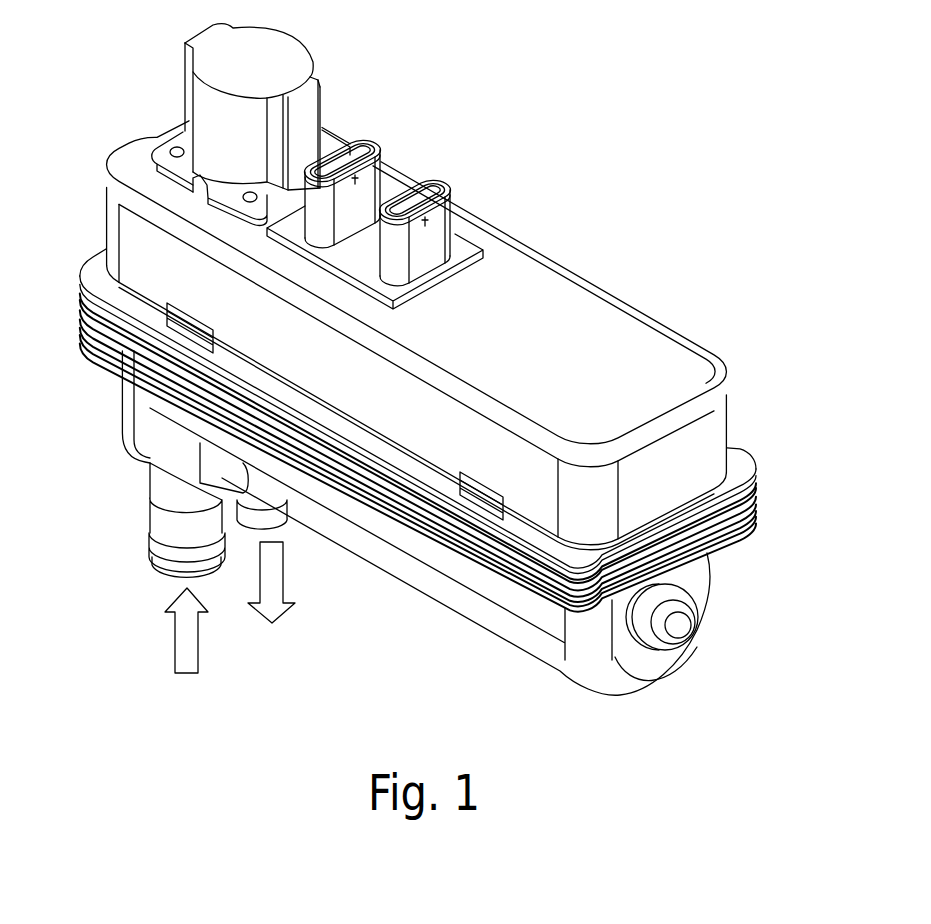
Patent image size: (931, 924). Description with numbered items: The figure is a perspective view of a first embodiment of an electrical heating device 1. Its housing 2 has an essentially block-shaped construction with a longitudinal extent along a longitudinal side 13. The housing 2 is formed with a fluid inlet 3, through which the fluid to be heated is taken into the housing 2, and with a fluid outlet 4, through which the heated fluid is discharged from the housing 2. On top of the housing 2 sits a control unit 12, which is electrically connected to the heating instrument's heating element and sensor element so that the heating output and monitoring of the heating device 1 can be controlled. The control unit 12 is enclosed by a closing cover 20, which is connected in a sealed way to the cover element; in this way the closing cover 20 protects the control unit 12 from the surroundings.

The electrical heating device 1 is at (439, 360).
The housing 2 is at (450, 472).
The fluid inlet 3 is at (150, 516).
The fluid outlet 4 is at (272, 520).
The control unit 12 is at (442, 287).
The longitudinal side 13 is at (453, 567).
The closing cover 20 is at (657, 363).